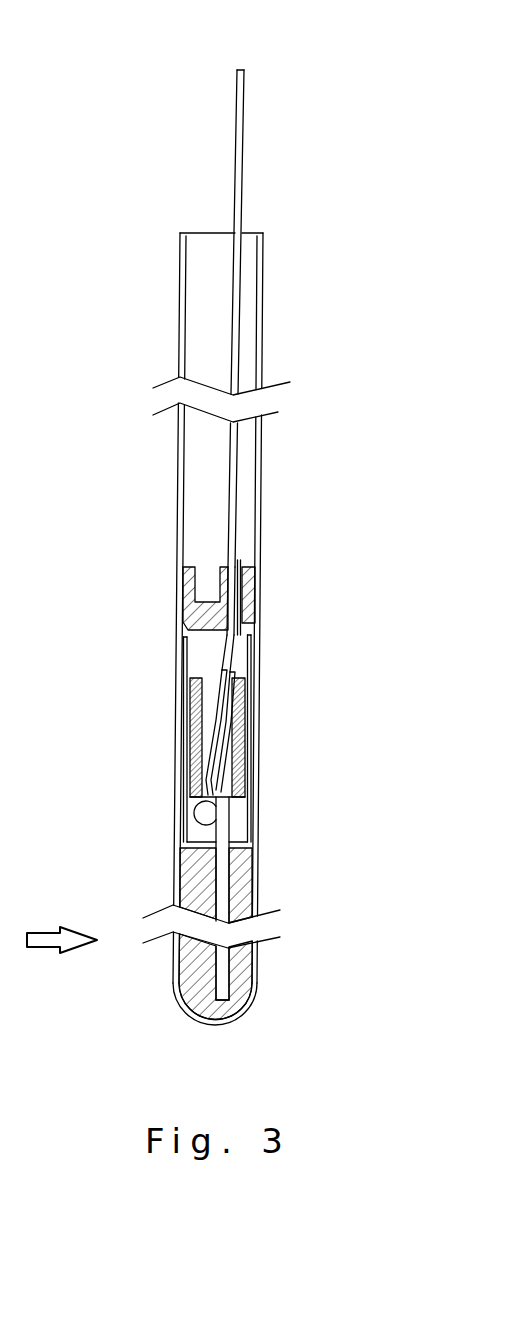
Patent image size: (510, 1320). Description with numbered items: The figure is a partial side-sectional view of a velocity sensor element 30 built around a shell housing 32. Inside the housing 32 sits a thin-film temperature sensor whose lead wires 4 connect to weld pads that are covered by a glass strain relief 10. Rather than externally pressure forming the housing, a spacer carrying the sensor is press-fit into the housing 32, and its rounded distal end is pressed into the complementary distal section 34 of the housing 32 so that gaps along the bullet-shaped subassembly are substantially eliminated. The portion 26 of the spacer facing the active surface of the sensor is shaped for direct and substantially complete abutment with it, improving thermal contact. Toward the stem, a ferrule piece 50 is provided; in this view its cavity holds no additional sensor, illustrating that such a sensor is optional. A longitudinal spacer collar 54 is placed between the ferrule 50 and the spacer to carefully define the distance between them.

The lead wires 4 is at (243, 70).
The glass strain relief 10 is at (197, 818).
The portion of the spacer 26 is at (212, 900).
The velocity sensor element 30 is at (116, 756).
The shell housing 32 is at (172, 972).
The distal section of housing 34 is at (235, 1018).
The ferrule piece 50 is at (183, 617).
The longitudinal spacer collar 54 is at (183, 680).